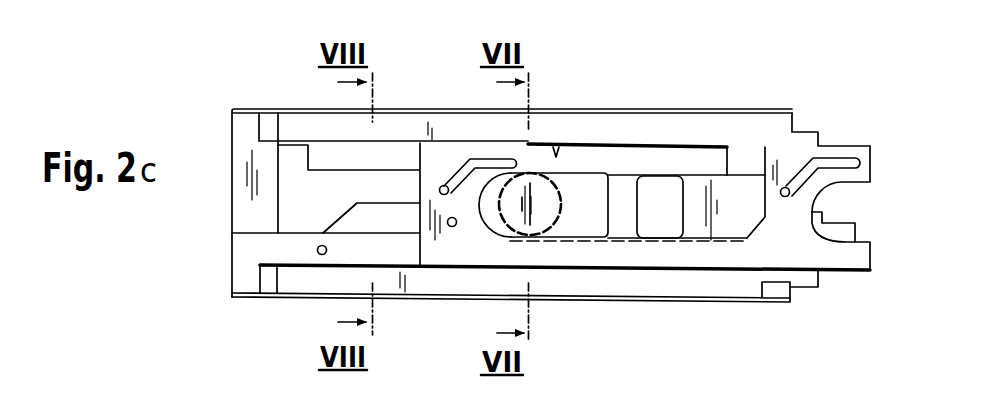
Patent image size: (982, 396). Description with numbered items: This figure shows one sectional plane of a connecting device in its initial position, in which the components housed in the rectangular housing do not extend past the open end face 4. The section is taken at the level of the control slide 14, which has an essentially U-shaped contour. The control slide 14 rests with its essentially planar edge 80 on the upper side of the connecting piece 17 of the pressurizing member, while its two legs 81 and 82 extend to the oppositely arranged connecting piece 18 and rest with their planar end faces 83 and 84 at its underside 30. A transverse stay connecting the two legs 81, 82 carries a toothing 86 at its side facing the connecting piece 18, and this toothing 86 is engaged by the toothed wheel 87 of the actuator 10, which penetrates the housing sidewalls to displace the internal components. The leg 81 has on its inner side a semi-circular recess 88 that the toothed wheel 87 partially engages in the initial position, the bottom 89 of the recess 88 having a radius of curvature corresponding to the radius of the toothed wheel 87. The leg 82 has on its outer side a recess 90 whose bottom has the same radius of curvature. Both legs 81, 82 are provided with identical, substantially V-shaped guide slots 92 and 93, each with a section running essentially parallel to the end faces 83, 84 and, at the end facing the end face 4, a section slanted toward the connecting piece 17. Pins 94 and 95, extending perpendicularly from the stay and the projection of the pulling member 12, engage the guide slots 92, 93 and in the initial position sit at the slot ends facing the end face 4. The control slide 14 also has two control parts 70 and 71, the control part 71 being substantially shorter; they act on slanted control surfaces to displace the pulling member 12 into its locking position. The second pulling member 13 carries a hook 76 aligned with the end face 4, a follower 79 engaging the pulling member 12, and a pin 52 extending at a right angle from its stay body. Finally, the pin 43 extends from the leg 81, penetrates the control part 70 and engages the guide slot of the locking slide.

The end face 4 is at (232, 113).
The connecting piece 18 is at (288, 125).
The leg 81 is at (430, 170).
The guide slot 92 is at (457, 172).
The pin 94 is at (439, 190).
The end face 83 is at (477, 142).
The recess 88 is at (495, 190).
The bottom 89 is at (478, 227).
The underside 30 is at (556, 150).
The pulling member 12 is at (613, 160).
The follower 79 is at (628, 205).
The leg 82 is at (778, 168).
The end face 84 is at (830, 147).
The guide slot 93 is at (851, 160).
The pin 95 is at (781, 196).
The control part 71 is at (815, 224).
The recess 90 is at (853, 228).
The actuator 10 is at (553, 219).
The edge 80 is at (541, 221).
The toothed wheel 87 is at (545, 222).
The control slide 14 is at (638, 270).
The toothing 86 is at (693, 244).
The connecting piece 17 is at (727, 284).
The hook 76 is at (233, 266).
The pulling member 13 is at (255, 257).
The pin 52 is at (317, 249).
The control part 70 is at (393, 230).
The pin 43 is at (450, 227).